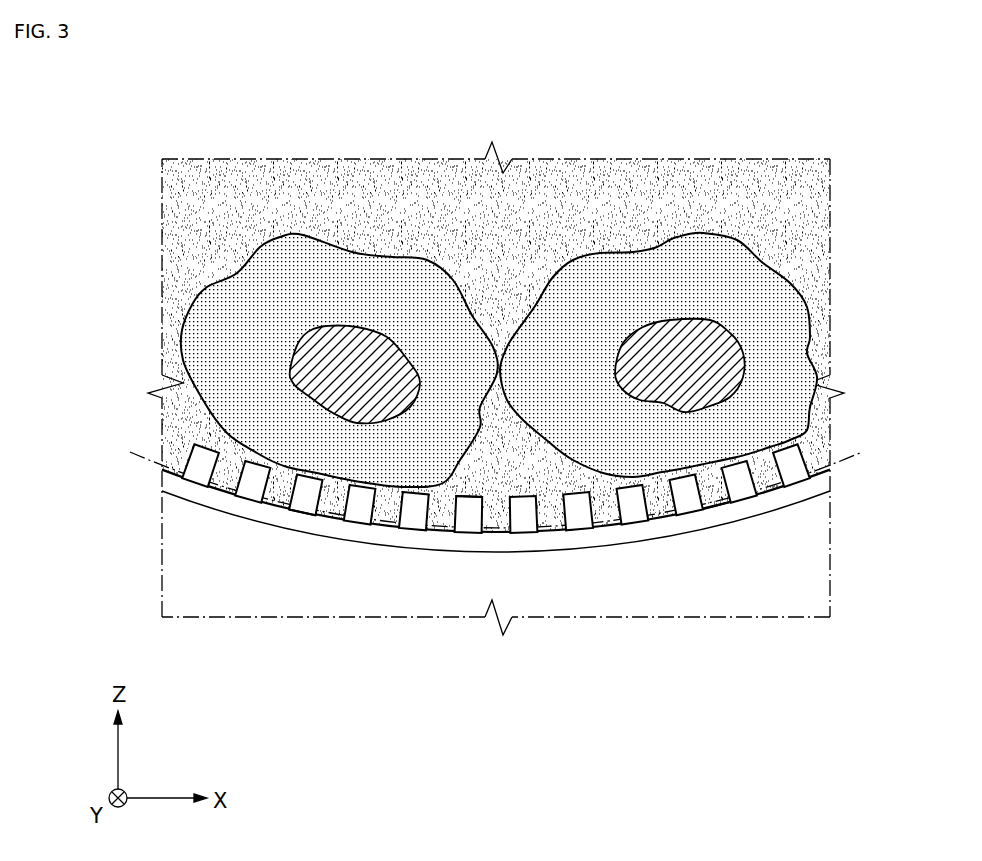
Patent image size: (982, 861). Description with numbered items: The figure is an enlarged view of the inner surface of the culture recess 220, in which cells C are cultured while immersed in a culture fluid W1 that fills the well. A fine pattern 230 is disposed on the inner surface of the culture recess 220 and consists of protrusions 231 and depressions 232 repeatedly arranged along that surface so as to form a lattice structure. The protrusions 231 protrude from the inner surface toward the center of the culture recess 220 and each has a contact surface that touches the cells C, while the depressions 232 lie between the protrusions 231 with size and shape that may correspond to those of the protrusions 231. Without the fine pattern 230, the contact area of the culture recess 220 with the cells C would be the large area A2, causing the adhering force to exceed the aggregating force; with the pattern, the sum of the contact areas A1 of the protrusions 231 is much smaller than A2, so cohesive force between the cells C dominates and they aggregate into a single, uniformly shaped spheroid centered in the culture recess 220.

The fluid W1 is at (217, 195).
The cells C is at (745, 288).
The area of contact surface of protrusion A1 is at (468, 496).
The contact area of culture recess A2 is at (293, 510).
The culture recess 220 is at (627, 533).
The fine pattern 230 is at (808, 679).
The protrusions 231 is at (753, 477).
The depressions 232 is at (722, 500).